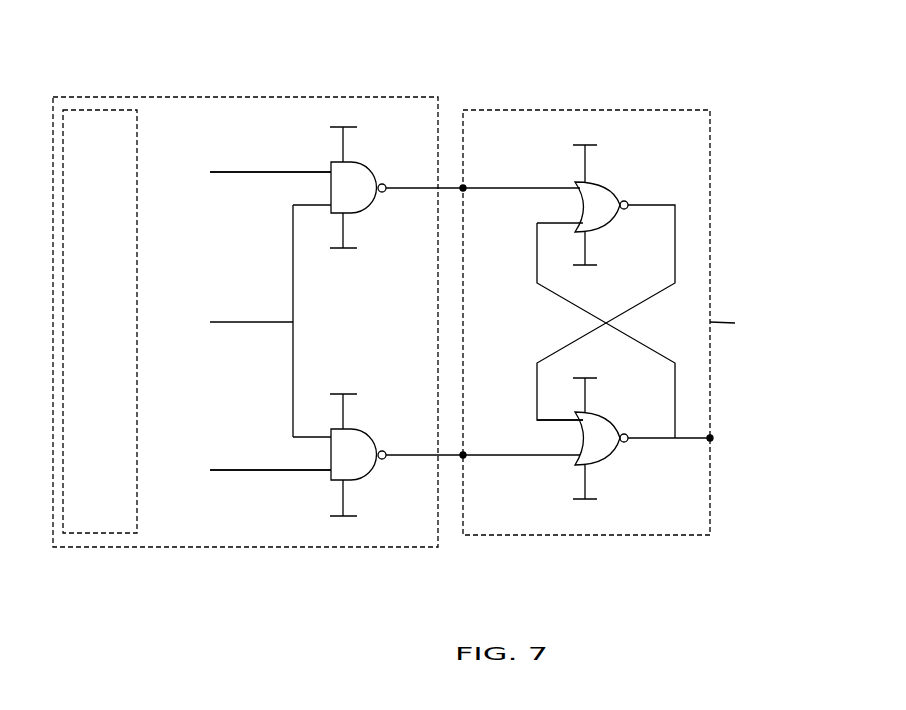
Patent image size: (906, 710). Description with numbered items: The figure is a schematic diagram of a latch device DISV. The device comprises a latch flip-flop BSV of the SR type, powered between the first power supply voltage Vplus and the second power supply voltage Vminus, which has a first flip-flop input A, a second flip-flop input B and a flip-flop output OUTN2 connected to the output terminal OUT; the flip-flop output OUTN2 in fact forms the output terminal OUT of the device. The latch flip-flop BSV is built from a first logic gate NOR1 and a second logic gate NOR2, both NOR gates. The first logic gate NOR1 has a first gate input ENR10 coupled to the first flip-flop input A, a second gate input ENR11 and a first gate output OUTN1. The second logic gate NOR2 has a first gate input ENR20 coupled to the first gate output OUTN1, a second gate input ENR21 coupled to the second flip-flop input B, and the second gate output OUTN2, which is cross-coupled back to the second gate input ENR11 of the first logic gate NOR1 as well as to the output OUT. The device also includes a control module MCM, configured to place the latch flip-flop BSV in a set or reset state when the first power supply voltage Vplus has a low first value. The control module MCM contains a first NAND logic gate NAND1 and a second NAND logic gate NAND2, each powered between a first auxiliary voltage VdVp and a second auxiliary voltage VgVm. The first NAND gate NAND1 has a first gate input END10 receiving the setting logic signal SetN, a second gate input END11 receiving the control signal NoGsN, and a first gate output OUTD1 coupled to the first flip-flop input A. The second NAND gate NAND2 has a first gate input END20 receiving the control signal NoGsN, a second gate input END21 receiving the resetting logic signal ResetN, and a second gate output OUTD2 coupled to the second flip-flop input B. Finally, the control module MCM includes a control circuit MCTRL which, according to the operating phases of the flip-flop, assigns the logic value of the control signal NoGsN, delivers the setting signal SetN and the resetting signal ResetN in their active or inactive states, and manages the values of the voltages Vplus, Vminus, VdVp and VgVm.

The control module MCM is at (406, 97).
The control circuit MCTRL is at (100, 110).
The latch device DISV is at (726, 78).
The latch flip-flop BSV is at (711, 320).
The first NAND logic gate NAND1 is at (360, 195).
The second NAND logic gate NAND2 is at (360, 462).
The first logic gate NOR1 is at (605, 210).
The second logic gate NOR2 is at (605, 445).
The first gate input END10 is at (329, 172).
The second gate input END11 is at (329, 205).
The first gate input END20 is at (329, 439).
The second gate input END21 is at (329, 472).
The first gate input ENR10 is at (578, 185).
The second gate input ENR11 is at (580, 222).
The first gate input ENR20 is at (578, 418).
The second gate input ENR21 is at (578, 458).
The first gate output OUTD1 is at (386, 184).
The second gate output OUTD2 is at (386, 451).
The first gate output OUTN1 is at (627, 201).
The second gate output OUTN2 is at (627, 434).
The output terminal OUT is at (712, 436).
The logic signal for setting the latch flip-flop SetN is at (248, 173).
The logic signal for resetting the latch flip-flop ResetN is at (238, 471).
The control signal NoGsN is at (219, 321).
The first auxiliary voltage VdVp is at (344, 267).
The second auxiliary voltage VgVm is at (344, 376).
The first power supply voltage Vplus is at (586, 267).
The second power supply voltage Vminus is at (587, 378).
The first flip-flop input A is at (457, 179).
The second flip-flop input B is at (457, 446).